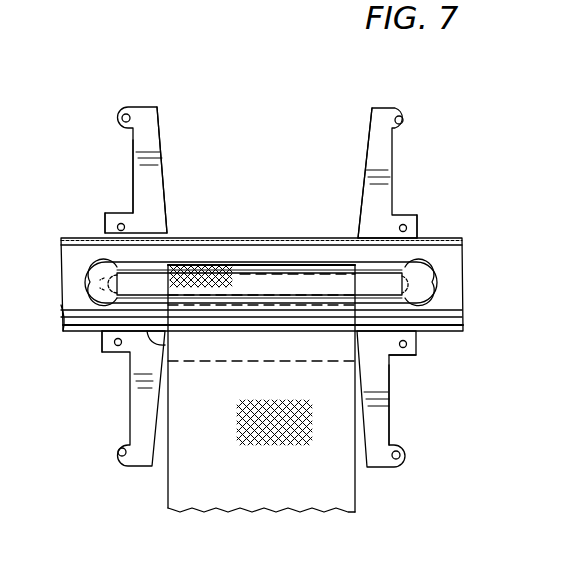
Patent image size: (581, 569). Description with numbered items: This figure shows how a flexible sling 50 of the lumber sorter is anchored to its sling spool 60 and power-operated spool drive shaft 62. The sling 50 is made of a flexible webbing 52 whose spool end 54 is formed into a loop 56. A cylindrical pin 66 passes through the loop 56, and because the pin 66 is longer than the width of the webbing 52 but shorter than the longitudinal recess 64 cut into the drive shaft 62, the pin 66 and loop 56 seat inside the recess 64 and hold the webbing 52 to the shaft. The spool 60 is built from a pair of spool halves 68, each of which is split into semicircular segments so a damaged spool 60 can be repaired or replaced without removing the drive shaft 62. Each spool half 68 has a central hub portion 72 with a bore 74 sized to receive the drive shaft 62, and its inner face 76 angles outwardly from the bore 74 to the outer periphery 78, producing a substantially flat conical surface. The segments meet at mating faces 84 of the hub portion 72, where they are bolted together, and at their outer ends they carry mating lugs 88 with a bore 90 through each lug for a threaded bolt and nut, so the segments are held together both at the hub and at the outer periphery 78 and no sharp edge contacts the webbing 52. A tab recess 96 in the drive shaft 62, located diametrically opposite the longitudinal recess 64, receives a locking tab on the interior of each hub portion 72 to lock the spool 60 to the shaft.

The flexible sling 50 is at (165, 510).
The webbing 52 is at (343, 493).
The spool end 54 is at (276, 344).
The loop 56 is at (415, 335).
The sling spool 60 is at (147, 107).
The spool drive shaft 62 is at (82, 237).
The longitudinal recess 64 is at (363, 273).
The cylindrical pin 66 is at (157, 282).
The spool half 68 is at (133, 149).
The central hub portion 72 is at (121, 207).
The bore 74 is at (165, 345).
The inner face 76 is at (160, 137).
The outer periphery 78 is at (380, 105).
The mating face 84 is at (157, 178).
The mating lug 88 is at (123, 112).
The bore 90 is at (404, 116).
The tab recess 96 is at (100, 300).